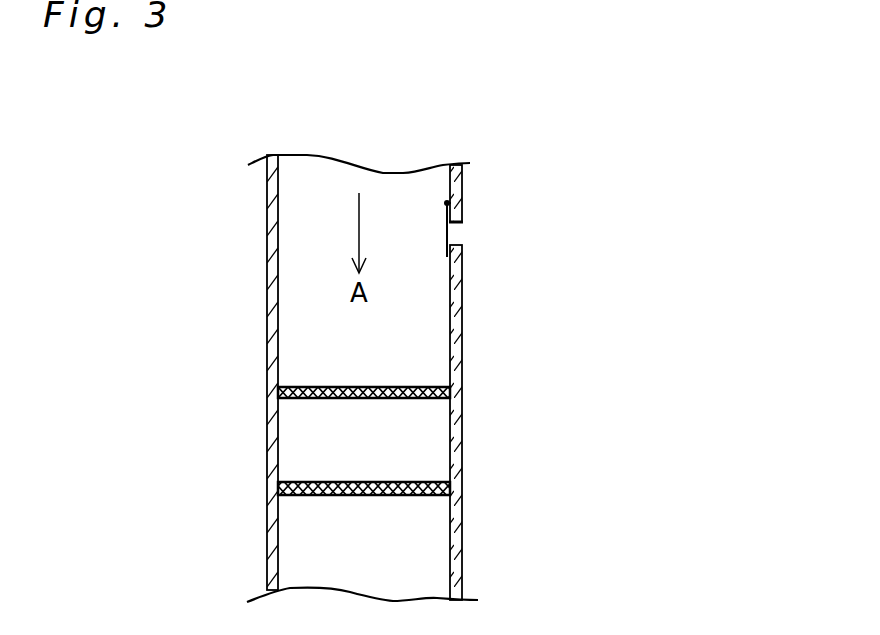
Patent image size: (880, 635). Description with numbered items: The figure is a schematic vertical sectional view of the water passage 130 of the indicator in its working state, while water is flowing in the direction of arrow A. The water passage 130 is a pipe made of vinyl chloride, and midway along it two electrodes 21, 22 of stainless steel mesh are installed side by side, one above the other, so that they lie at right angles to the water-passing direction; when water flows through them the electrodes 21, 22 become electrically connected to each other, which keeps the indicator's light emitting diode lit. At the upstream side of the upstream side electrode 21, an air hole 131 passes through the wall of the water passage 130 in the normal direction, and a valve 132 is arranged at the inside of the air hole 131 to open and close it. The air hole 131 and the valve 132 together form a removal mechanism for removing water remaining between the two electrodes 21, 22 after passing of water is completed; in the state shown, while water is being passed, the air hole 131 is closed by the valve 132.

The water passage 130 is at (265, 310).
The air hole 131 is at (457, 235).
The valve 132 is at (445, 222).
The upstream side electrode 21 is at (420, 387).
The electrode 22 is at (422, 482).